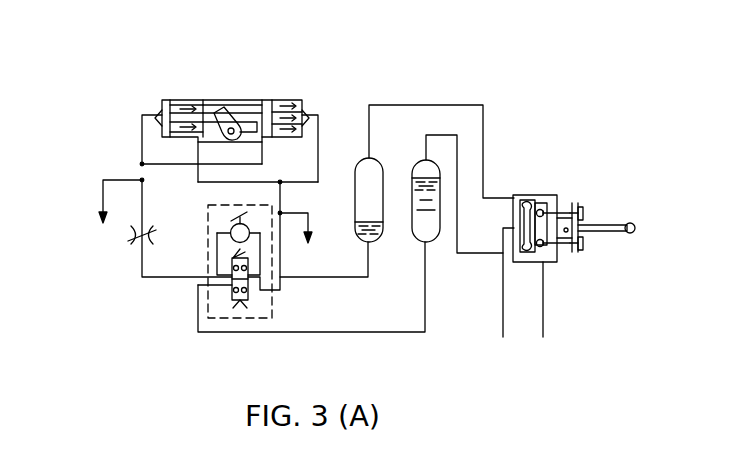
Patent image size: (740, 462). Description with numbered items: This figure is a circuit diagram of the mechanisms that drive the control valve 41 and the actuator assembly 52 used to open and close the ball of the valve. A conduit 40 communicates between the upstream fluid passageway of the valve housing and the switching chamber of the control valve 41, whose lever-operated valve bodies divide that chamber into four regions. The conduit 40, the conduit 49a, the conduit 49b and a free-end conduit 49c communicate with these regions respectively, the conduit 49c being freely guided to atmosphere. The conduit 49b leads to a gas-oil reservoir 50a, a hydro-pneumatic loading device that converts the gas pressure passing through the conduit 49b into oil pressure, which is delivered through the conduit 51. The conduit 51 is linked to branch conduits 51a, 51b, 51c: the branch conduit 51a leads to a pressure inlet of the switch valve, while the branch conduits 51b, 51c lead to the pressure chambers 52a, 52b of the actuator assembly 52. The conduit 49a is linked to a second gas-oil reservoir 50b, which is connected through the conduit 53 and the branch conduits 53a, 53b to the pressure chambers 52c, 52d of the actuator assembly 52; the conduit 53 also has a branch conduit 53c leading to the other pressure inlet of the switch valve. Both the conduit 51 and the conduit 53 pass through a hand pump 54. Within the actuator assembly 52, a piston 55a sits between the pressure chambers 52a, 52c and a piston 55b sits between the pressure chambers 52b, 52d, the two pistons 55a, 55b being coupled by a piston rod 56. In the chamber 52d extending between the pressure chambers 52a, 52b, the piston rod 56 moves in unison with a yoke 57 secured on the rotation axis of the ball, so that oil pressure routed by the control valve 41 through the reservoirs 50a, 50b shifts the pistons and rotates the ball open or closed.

The conduit 40 is at (502, 305).
The control valve 41 is at (565, 195).
The conduit 49a is at (465, 105).
The conduit 49b is at (457, 232).
The free-end conduit 49c is at (545, 307).
The gas-oil reservoir 50a is at (432, 243).
The second gas-oil reservoir 50b is at (380, 242).
The conduit 51 is at (153, 280).
The branch conduit 51a is at (103, 193).
The branch conduit 51b is at (172, 167).
The branch conduit 51c is at (142, 143).
The actuator assembly 52 is at (220, 109).
The pressure chamber 52a is at (162, 99).
The pressure chamber 52b is at (262, 102).
The pressure chamber 52c is at (197, 100).
The pressure chamber 52d is at (298, 100).
The conduit 53 is at (283, 193).
The branch conduit 53a is at (262, 180).
The branch conduit 53b is at (318, 143).
The branch conduit 53c is at (310, 232).
The hand pump 54 is at (212, 293).
The piston 55a is at (162, 125).
The piston 55b is at (302, 115).
The piston rod 56 is at (237, 117).
The yoke 57 is at (213, 137).